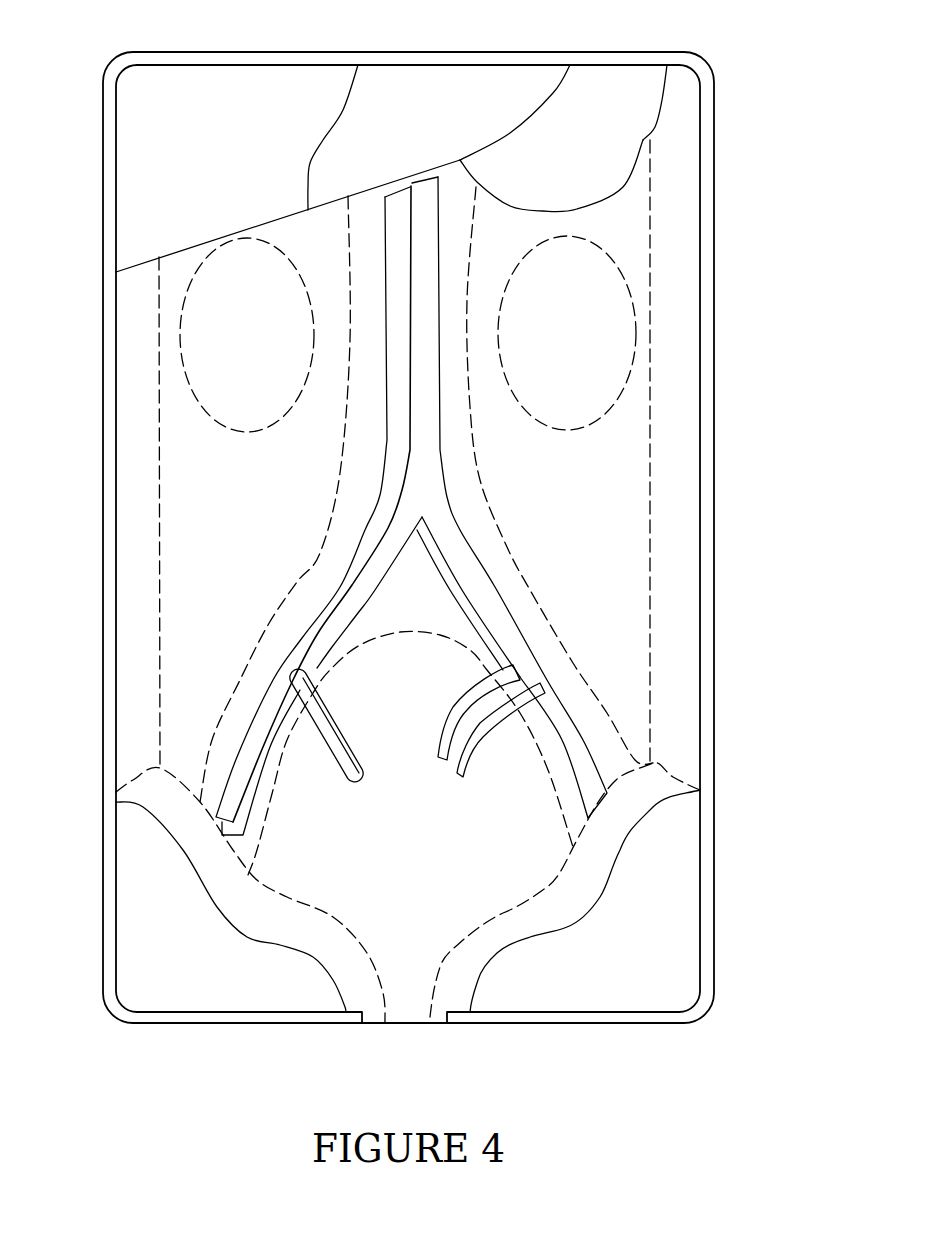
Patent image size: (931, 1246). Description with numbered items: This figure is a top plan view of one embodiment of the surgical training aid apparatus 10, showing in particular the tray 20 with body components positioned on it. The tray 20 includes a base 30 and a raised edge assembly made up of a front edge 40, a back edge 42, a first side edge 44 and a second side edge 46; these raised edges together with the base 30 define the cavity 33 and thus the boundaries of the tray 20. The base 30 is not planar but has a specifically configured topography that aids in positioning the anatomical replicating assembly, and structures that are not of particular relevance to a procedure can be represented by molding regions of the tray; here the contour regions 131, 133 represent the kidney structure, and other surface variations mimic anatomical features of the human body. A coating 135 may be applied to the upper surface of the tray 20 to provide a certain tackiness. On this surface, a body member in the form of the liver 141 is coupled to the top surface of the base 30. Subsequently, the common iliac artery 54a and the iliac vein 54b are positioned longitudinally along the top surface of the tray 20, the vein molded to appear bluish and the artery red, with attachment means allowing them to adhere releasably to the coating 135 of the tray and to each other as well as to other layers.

The surgical training aid apparatus 10 is at (793, 567).
The tray 20 is at (687, 203).
The base 30 is at (637, 102).
The cavity 33 is at (170, 510).
The front edge 40 is at (611, 51).
The back edge 42 is at (618, 1025).
The first side edge 44 is at (130, 910).
The second side edge 46 is at (687, 750).
The common iliac artery 54a is at (587, 782).
The iliac vein 54b is at (385, 507).
The contour region 131 is at (247, 431).
The contour region 133 is at (577, 427).
The coating 135 is at (687, 927).
The liver 141 is at (258, 83).